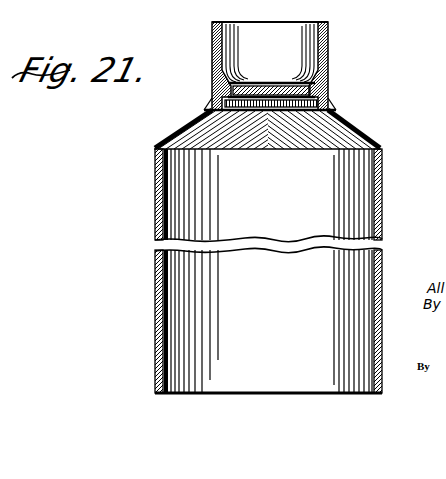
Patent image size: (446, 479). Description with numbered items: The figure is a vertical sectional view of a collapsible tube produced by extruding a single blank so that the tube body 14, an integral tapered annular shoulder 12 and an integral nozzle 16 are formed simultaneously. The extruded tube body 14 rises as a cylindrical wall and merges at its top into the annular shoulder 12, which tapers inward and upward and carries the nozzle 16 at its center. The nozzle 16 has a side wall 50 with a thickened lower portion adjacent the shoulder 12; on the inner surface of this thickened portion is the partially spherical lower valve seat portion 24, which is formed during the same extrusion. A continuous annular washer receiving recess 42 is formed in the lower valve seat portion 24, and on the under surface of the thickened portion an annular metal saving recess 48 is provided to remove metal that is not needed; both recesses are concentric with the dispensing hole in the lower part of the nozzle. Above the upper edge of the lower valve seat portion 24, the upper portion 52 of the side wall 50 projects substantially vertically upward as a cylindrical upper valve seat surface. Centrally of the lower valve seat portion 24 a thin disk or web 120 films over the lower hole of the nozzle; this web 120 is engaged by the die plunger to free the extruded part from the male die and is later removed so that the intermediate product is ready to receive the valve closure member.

The annular shoulder 12 is at (190, 128).
The tube body 14 is at (158, 181).
The nozzle member 16 is at (214, 56).
The lower valve seat portion 24 is at (329, 73).
The annular washer receiving recess 42 is at (248, 85).
The annular metal saving recess 48 is at (333, 127).
The side wall 50 is at (328, 63).
The upper portion of the side wall 52 is at (328, 33).
The thin disk or web 120 is at (262, 106).